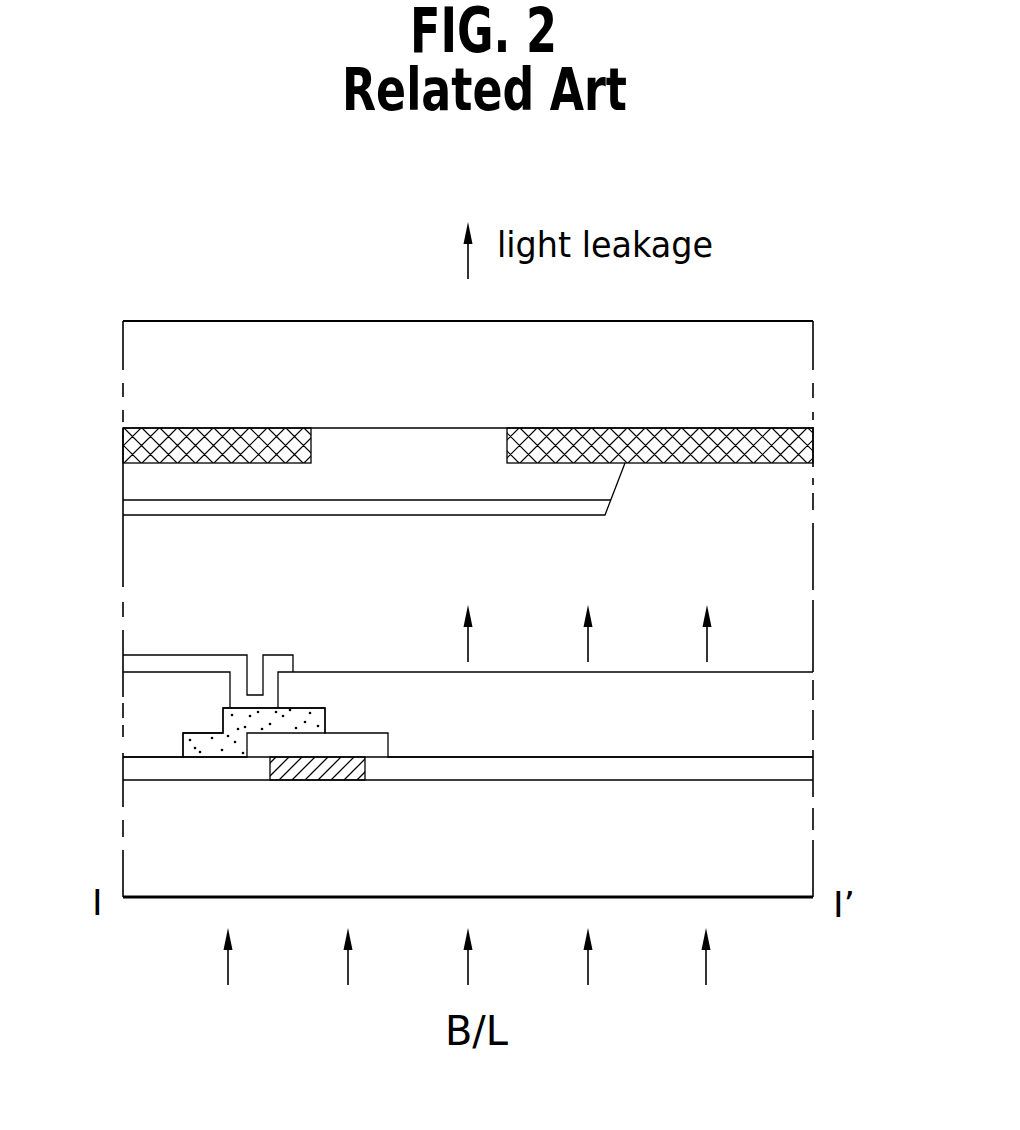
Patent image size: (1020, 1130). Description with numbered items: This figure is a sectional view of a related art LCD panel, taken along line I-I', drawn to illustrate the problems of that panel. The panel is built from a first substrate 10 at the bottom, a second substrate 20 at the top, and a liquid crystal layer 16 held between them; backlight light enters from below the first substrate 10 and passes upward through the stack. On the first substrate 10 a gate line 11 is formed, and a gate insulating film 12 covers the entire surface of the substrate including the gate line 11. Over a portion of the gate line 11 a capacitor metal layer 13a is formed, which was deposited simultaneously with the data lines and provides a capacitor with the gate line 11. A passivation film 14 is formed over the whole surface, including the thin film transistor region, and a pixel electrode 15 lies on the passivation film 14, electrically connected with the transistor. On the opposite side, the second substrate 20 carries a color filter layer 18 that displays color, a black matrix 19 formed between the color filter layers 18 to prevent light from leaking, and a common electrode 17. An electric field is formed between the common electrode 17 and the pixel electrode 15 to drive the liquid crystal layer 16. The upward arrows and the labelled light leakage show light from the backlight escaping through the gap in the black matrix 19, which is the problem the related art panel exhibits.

The first substrate 10 is at (798, 838).
The gate line 11 is at (318, 772).
The gate insulating film 12 is at (798, 771).
The capacitor metal layer 13a is at (305, 717).
The passivation film 14 is at (798, 713).
The pixel electrode 15 is at (138, 663).
The liquid crystal layer 16 is at (798, 548).
The common electrode 17 is at (147, 510).
The color filter layer 18 is at (137, 480).
The black matrix 19 is at (812, 445).
The second substrate 20 is at (798, 358).